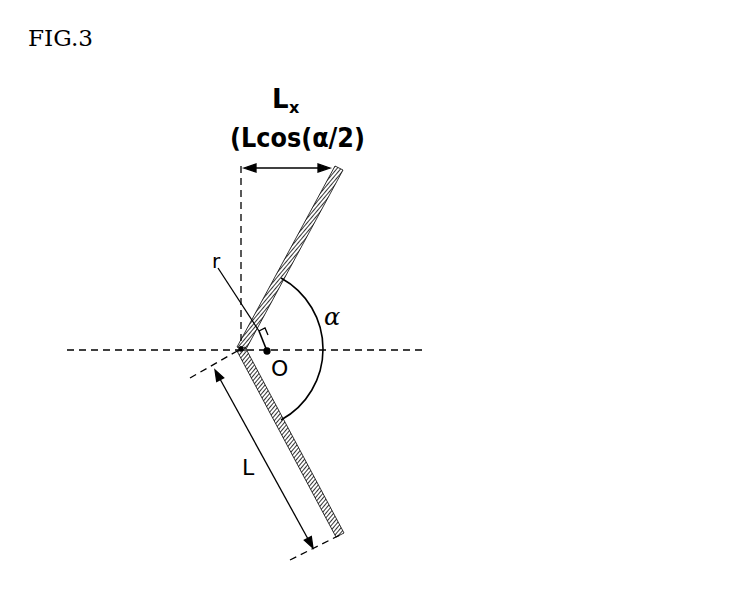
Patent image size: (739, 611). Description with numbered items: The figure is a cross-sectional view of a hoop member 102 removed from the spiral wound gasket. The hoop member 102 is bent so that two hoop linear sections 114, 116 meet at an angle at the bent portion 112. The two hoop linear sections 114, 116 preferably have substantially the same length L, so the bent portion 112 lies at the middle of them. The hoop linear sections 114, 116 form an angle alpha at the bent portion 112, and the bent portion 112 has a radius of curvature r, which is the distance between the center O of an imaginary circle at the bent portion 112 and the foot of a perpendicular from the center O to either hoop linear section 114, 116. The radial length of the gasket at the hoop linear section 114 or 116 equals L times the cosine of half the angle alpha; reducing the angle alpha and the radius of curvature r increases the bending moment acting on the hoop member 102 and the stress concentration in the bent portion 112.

The hoop member 102 is at (403, 351).
The bent portion 112 is at (241, 349).
The hoop linear section 114 is at (322, 208).
The hoop linear section 116 is at (353, 442).